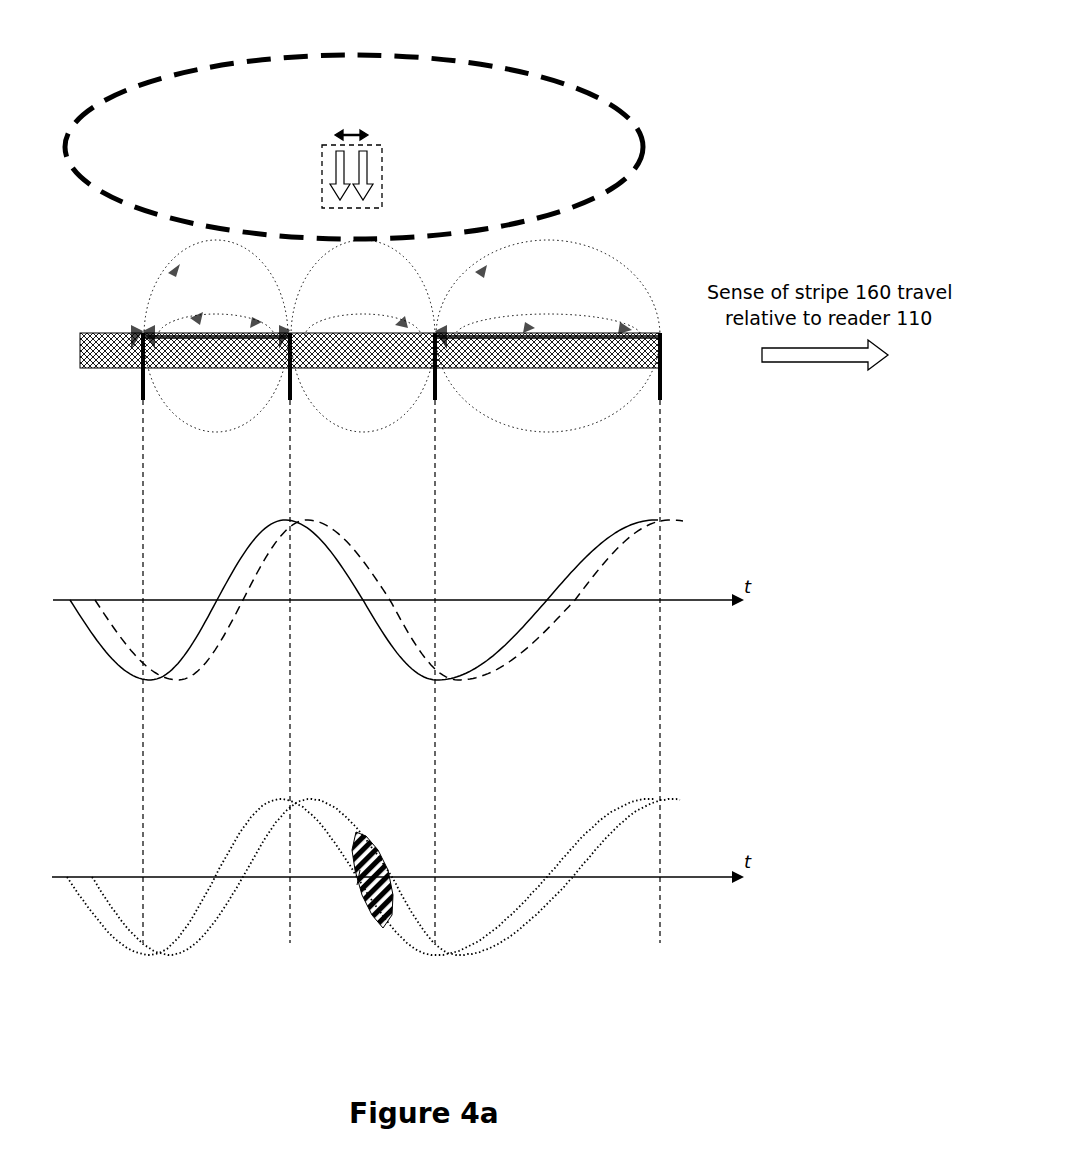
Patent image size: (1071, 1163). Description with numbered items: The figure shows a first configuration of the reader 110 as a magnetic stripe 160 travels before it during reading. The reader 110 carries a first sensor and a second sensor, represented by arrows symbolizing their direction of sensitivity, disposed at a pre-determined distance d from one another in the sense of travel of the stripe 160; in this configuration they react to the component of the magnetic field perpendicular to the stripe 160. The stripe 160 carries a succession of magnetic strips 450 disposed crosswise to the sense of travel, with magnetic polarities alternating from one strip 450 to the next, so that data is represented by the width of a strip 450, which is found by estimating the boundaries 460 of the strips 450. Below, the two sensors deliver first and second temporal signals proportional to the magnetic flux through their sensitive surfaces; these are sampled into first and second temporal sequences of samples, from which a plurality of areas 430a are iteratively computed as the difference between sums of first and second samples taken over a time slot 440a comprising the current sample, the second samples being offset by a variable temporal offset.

The reader 110 is at (578, 80).
The pre-determined distance d is at (351, 125).
The magnetic stripe 160 is at (100, 362).
The magnetic strips 450 is at (614, 332).
The boundaries 460 is at (437, 382).
The area 430a is at (380, 833).
The time slot 440a is at (358, 888).